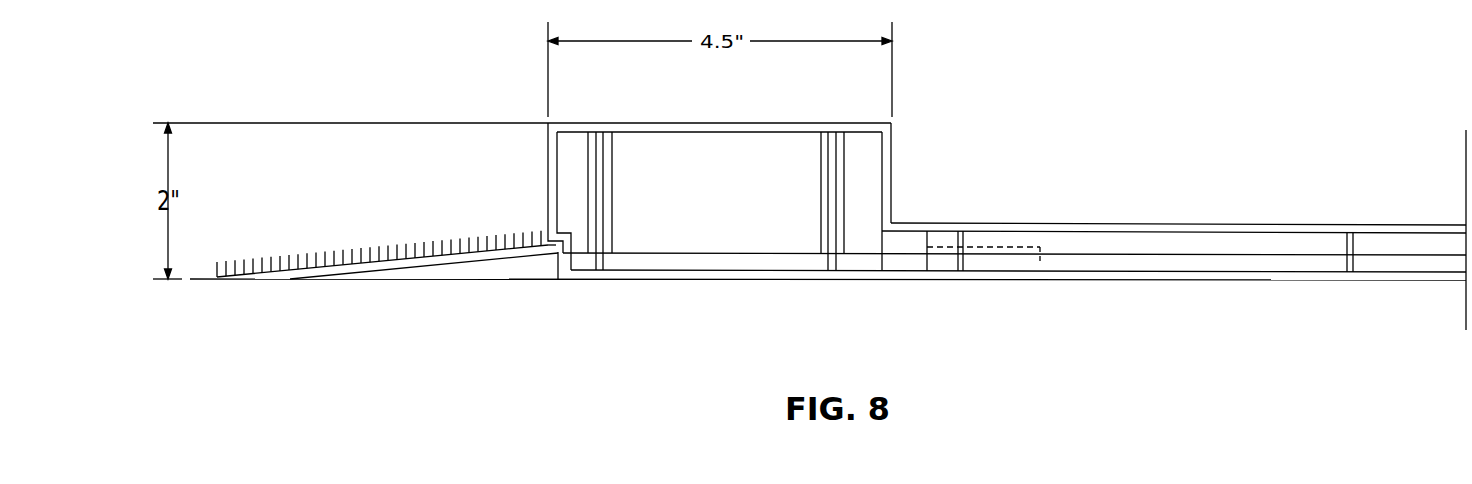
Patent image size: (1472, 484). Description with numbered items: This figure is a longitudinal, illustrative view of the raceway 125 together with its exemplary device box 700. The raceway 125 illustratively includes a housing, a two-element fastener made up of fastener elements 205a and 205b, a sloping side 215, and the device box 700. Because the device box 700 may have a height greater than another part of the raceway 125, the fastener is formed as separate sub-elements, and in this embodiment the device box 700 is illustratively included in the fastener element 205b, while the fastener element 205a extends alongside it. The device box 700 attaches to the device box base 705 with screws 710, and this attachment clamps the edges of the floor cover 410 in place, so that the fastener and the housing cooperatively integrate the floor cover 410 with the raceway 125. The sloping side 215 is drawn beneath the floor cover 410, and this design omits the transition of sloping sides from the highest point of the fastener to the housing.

The raceway 125 is at (499, 84).
The fastener element 205a is at (1118, 243).
The fastener element 205b is at (727, 123).
The sloping side 215 is at (427, 277).
The floor cover 410 is at (324, 229).
The device box 700 is at (547, 175).
The device box base 705 is at (564, 263).
The screws 710 is at (602, 127).